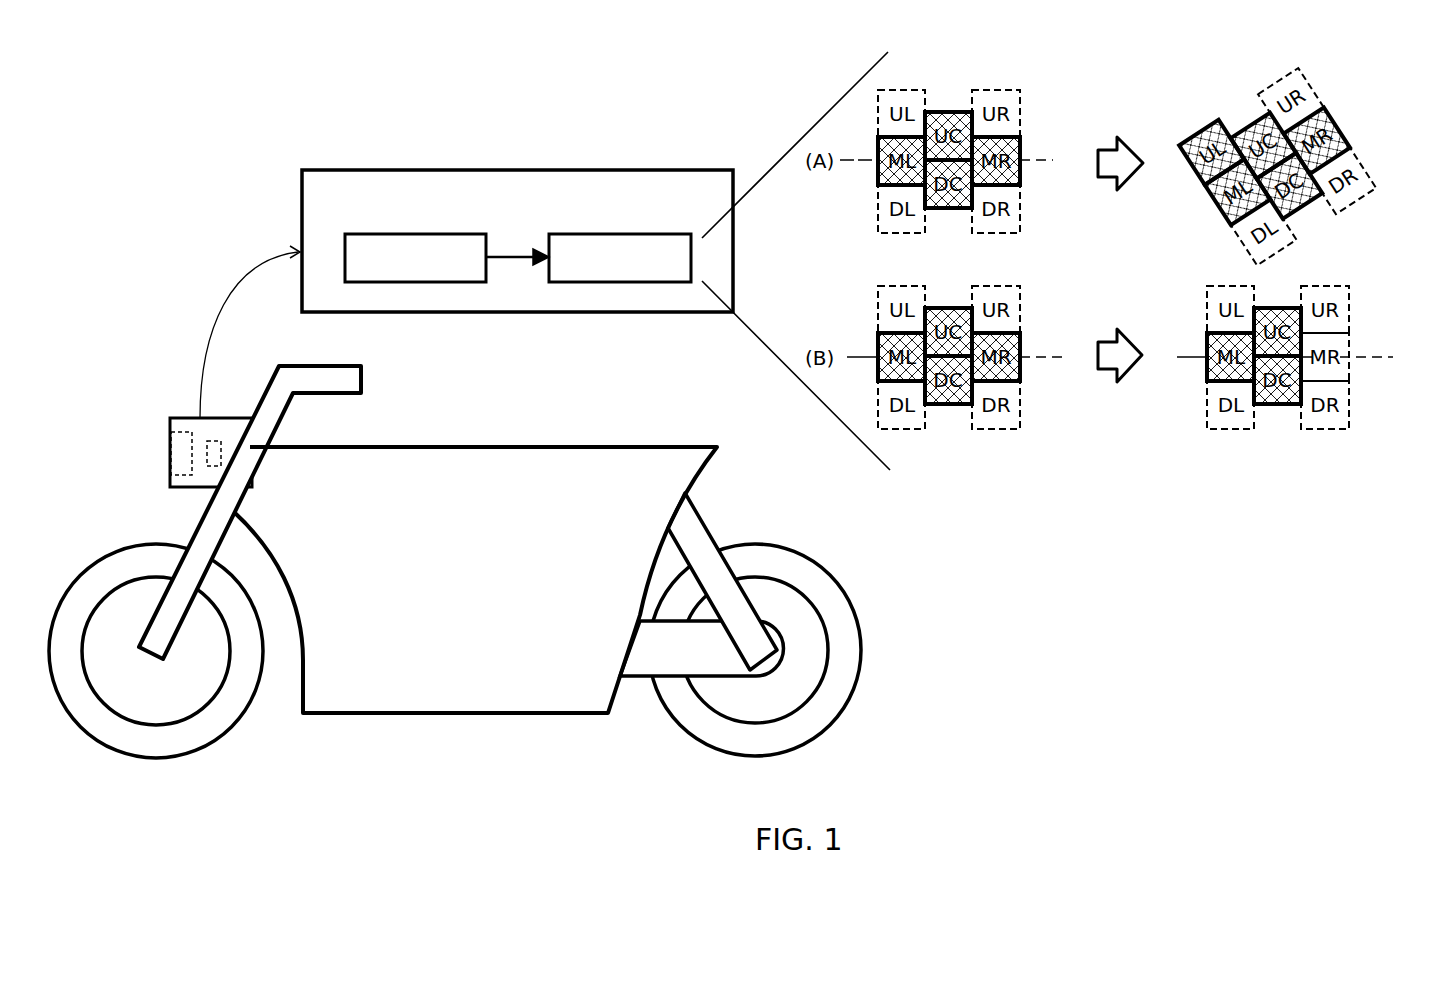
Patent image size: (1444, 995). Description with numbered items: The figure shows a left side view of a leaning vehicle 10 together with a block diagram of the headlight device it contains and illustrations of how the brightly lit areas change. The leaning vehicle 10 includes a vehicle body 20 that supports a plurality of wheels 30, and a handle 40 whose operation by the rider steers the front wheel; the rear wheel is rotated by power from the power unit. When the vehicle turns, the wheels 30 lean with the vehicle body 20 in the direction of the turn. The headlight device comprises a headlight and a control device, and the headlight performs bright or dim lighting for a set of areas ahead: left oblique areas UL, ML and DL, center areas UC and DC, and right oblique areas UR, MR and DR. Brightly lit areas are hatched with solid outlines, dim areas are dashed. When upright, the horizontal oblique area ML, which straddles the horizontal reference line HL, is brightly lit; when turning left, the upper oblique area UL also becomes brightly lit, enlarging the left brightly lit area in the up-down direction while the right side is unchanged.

The leaning vehicle 10 is at (495, 513).
The vehicle body 20 is at (597, 442).
The plurality of wheels 30 is at (241, 715).
The handle 40 is at (363, 373).
The horizontal reference line HL is at (1025, 159).